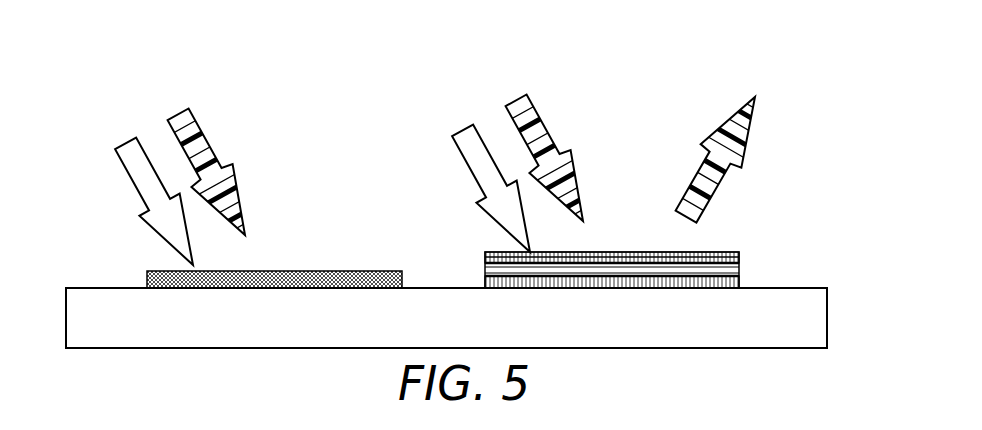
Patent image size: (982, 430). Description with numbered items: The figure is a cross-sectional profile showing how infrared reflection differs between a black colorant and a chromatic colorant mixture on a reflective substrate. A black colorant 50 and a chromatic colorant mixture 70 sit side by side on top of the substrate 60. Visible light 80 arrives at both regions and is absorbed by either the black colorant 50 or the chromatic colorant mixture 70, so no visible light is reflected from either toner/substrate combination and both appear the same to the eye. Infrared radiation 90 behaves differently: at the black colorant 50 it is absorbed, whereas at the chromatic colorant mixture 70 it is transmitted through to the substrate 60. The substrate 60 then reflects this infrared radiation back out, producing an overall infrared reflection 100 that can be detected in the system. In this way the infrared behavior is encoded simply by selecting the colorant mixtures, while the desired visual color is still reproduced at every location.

The black colorant 50 is at (338, 271).
The substrate 60 is at (795, 288).
The chromatic colorant mixture 70 is at (739, 270).
The visible light 80 is at (121, 147).
The infrared radiation 90 is at (176, 116).
The infrared reflection 100 is at (735, 114).